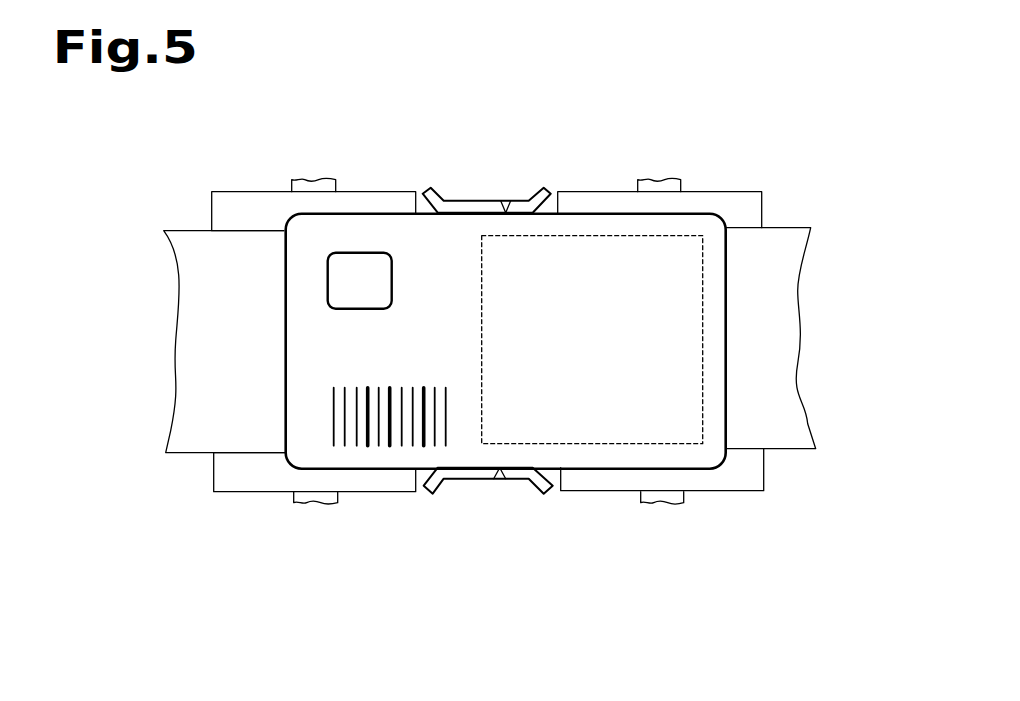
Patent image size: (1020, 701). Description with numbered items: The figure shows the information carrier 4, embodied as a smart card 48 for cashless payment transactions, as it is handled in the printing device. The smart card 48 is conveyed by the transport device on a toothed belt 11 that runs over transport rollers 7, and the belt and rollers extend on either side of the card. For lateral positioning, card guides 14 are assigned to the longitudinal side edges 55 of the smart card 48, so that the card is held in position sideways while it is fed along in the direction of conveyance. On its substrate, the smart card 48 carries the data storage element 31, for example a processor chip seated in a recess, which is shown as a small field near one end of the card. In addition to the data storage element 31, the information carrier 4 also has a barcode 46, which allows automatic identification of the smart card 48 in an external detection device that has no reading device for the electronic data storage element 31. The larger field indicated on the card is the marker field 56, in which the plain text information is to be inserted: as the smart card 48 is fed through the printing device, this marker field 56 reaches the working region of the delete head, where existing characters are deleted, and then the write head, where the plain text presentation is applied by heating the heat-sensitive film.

The information carrier 4 is at (757, 343).
The transport rollers 7 is at (737, 205).
The toothed belt 11 is at (752, 282).
The card guides 14 is at (452, 208).
The data storage element 31 is at (362, 275).
The barcode 46 is at (317, 408).
The smart card 48 is at (568, 230).
The longitudinal side edges 55 is at (503, 208).
The marker field 56 is at (610, 315).